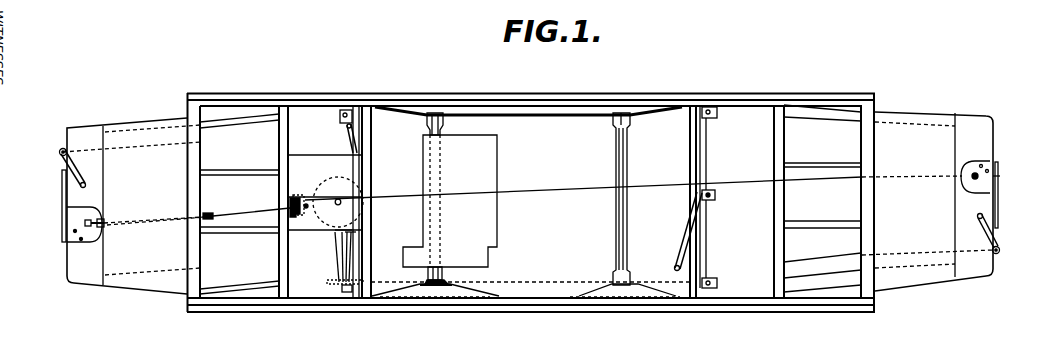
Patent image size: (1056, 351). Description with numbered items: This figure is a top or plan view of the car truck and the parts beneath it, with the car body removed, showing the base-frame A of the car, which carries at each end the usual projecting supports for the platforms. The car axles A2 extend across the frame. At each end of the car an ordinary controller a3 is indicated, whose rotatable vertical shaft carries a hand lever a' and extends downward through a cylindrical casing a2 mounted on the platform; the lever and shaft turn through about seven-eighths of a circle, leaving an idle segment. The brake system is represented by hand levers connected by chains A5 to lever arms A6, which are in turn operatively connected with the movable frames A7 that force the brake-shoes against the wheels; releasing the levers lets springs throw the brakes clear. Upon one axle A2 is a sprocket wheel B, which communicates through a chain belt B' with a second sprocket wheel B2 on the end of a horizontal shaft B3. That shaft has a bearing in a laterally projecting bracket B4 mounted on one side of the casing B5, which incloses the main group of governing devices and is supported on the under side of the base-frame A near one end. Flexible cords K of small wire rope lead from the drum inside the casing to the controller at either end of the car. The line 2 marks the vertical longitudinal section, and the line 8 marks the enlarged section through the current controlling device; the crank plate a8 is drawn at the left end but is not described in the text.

The base-frame A is at (531, 185).
The axles A2 is at (440, 266).
The chains A5 is at (242, 142).
The lever arms A6 is at (348, 140).
The movable frames A7 is at (341, 122).
The hand lever a' is at (110, 211).
The cylindrical casing a2 is at (972, 161).
The controller a3 is at (972, 193).
The crank plate a8 is at (85, 244).
The sprocket wheel B is at (450, 278).
The chain belt B' is at (530, 270).
The second sprocket wheel B2 is at (336, 275).
The horizontal shaft B3 is at (330, 256).
The laterally projecting bracket B4 is at (352, 244).
The casing B5 is at (350, 175).
The flexible cords K is at (322, 195).
The section line 2 2 is at (52, 204).
The section line 8 8 is at (35, 216).